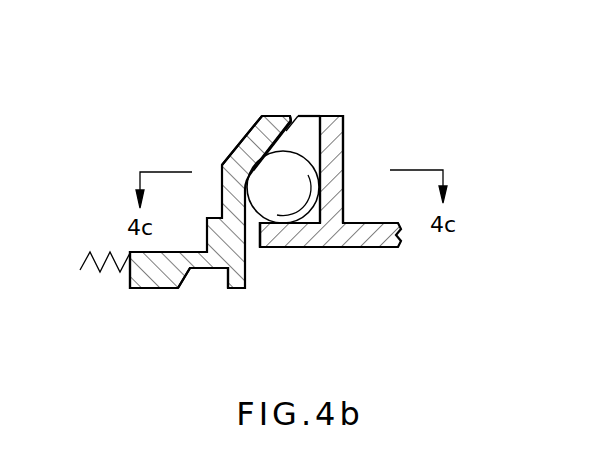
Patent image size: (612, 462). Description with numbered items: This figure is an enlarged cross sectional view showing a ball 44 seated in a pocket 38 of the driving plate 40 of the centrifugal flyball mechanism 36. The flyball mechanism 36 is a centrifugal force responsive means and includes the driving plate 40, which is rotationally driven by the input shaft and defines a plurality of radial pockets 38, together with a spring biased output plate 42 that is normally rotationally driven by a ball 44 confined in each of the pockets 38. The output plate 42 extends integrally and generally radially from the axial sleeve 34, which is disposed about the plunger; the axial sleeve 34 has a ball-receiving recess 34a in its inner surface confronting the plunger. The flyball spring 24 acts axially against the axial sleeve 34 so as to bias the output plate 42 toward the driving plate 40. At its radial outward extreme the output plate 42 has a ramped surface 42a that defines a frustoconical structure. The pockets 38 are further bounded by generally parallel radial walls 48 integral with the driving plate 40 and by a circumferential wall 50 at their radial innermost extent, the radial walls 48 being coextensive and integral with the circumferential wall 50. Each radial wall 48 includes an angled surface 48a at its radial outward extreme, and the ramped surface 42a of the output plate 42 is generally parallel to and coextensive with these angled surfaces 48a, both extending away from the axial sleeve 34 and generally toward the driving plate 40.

The flyball spring 24 is at (80, 270).
The axial sleeve 34 is at (163, 282).
The ball-receiving recess 34a is at (207, 268).
The flyball mechanism 36 is at (321, 93).
The radial pockets 38 is at (307, 140).
The driving plate 40 is at (333, 143).
The output plate 42 is at (218, 162).
The ramped surface 42a is at (243, 137).
The ball 44 is at (301, 197).
The radial walls 48 is at (307, 126).
The angled surface 48a is at (275, 117).
The circumferential wall 50 is at (282, 238).